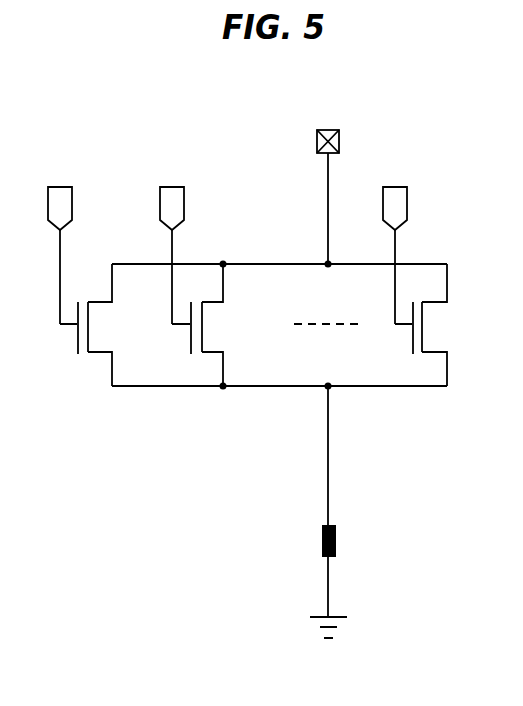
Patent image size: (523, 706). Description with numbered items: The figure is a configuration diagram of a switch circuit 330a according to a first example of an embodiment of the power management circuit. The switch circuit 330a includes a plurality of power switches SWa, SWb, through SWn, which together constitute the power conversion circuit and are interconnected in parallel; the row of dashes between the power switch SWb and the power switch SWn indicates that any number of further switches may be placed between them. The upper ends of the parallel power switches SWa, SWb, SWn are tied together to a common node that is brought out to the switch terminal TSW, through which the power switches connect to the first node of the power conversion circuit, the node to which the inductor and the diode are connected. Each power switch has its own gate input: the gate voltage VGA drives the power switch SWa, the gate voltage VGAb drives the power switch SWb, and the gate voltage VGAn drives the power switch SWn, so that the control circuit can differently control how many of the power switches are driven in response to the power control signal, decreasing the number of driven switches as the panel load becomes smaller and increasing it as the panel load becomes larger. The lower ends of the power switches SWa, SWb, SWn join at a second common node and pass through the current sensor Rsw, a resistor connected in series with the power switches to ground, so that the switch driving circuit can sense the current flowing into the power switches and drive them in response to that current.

The switch circuit 330a is at (90, 542).
The gate voltage input VGA is at (61, 237).
The gate voltage input VGAb is at (168, 237).
The gate voltage input VGAn is at (391, 237).
The power switch SWa is at (102, 325).
The power switch SWb is at (214, 325).
The power switch SWn is at (436, 325).
The switch terminal TSW is at (328, 182).
The current sensor Rsw is at (300, 501).